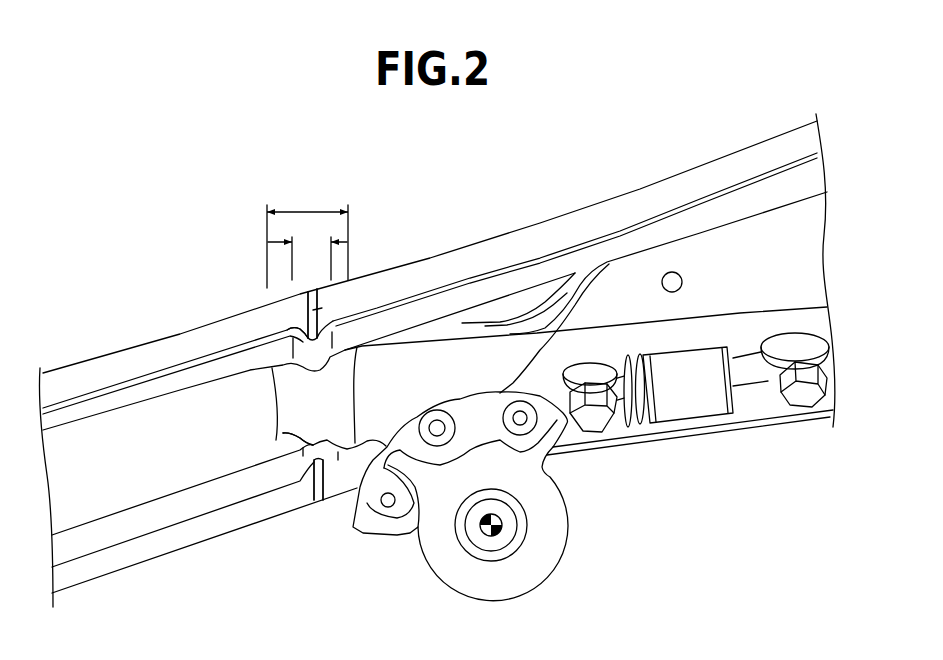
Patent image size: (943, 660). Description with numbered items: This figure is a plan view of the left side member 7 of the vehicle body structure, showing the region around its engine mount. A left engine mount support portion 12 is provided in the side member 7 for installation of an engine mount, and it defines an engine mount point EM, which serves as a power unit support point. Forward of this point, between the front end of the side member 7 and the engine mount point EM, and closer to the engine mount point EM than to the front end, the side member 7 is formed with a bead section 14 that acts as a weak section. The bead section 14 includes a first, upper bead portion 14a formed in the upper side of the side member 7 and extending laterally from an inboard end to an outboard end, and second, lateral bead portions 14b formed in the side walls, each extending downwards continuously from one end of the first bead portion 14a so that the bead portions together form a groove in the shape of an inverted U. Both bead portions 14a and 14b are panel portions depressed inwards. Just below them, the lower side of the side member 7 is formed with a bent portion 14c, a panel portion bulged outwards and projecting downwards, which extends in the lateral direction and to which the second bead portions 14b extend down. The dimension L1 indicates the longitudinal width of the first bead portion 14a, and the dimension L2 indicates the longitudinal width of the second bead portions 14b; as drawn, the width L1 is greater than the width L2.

The left side member 7 is at (485, 240).
The bead section 14 is at (288, 320).
The first bead portion 14a is at (300, 390).
The second bead portion 14b is at (288, 332).
The bent portion 14c is at (316, 296).
The left engine mount support portion 12 is at (550, 510).
The engine mount point EM is at (510, 535).
The width of first bead portion L1 is at (307, 238).
The width of second bead portions L2 is at (307, 255).